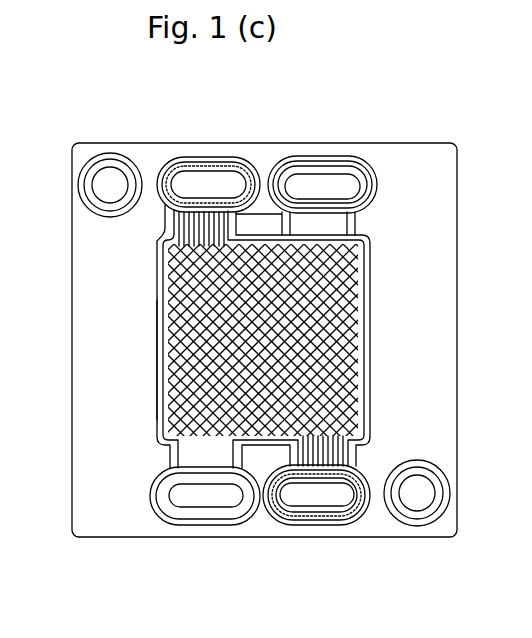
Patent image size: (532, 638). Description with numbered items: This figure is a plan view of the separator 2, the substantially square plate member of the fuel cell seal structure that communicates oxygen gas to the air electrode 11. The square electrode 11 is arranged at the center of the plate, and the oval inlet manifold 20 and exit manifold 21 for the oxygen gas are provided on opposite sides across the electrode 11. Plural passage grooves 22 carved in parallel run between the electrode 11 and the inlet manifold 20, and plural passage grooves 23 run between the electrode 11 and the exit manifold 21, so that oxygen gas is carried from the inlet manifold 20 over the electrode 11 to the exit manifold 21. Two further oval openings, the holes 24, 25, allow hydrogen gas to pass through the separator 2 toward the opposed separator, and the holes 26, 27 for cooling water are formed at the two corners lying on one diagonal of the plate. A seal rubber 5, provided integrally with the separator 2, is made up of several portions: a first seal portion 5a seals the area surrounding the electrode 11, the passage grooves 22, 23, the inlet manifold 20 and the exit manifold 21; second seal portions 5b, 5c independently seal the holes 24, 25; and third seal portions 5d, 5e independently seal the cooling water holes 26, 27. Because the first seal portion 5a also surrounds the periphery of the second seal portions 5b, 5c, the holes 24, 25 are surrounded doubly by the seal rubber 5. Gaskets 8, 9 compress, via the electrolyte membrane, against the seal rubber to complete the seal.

The separator 2 is at (432, 252).
The seal rubber 5 is at (384, 357).
The first seal portion 5a is at (157, 364).
The second seal portion 5b is at (347, 164).
The second seal portion 5c is at (209, 516).
The third seal portion 5d is at (122, 155).
The third seal portion 5e is at (426, 518).
The gasket 8 is at (193, 166).
The gasket 9 is at (333, 518).
The air electrode 11 is at (325, 388).
The inlet manifold 20 is at (219, 186).
The exit manifold 21 is at (303, 498).
The passage grooves 22 is at (197, 228).
The passage grooves 23 is at (327, 449).
The hole 24 is at (309, 186).
The hole 25 is at (193, 498).
The hole for cooling water 26 is at (104, 178).
The hole for cooling water 27 is at (413, 500).